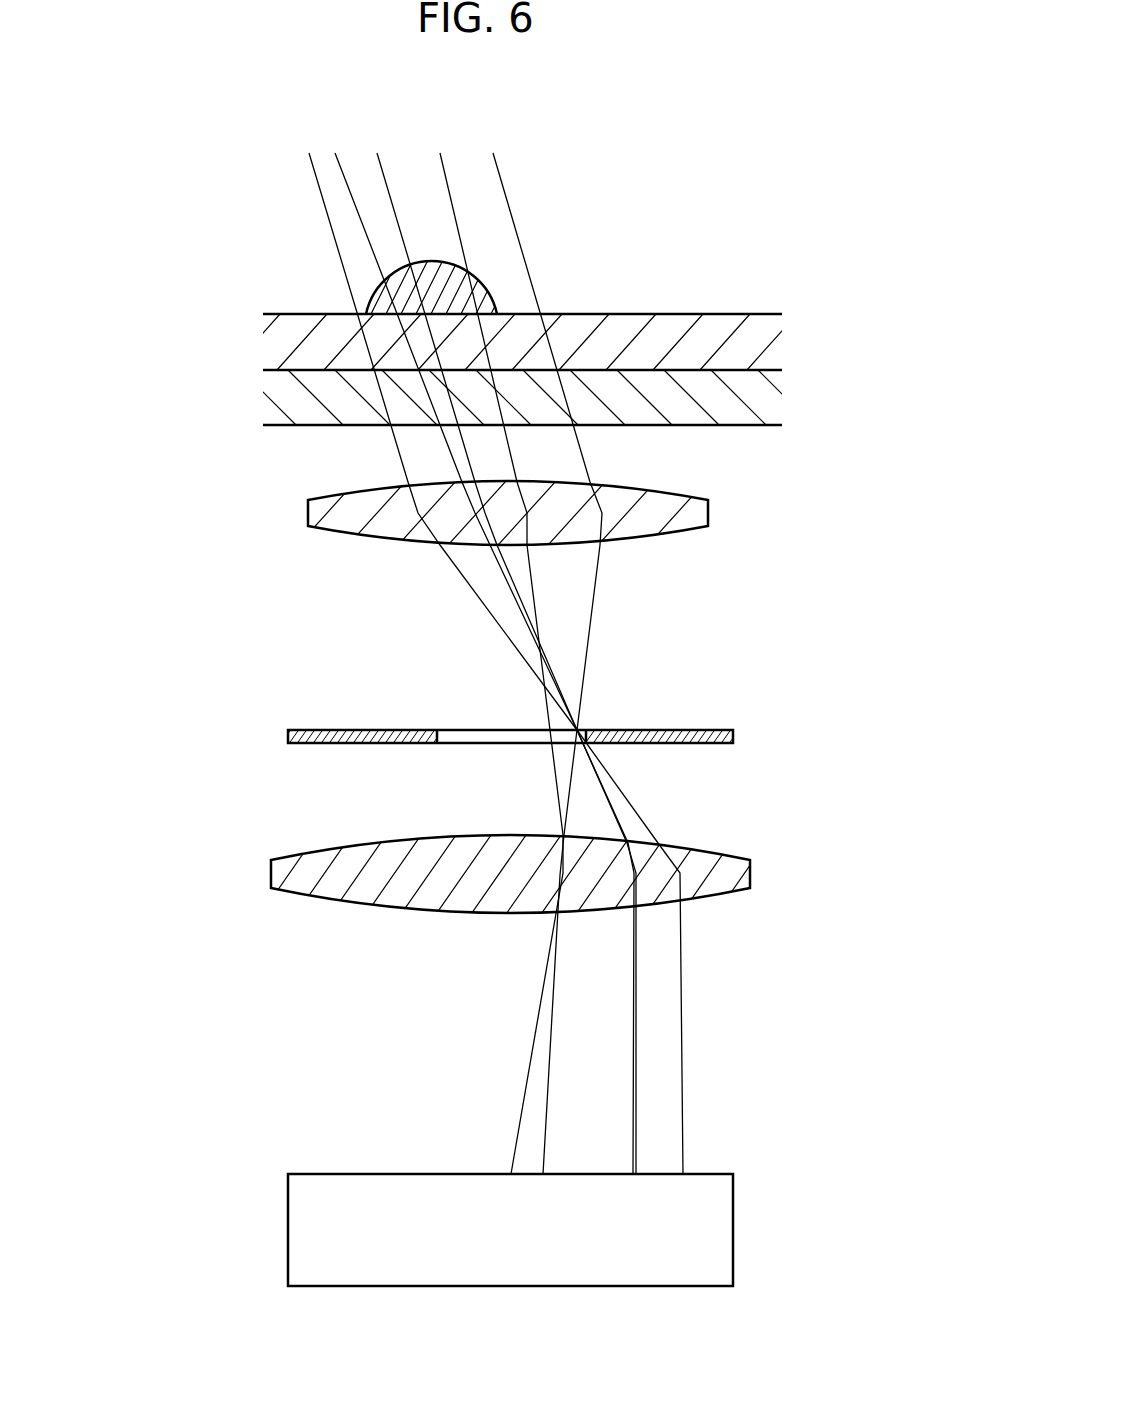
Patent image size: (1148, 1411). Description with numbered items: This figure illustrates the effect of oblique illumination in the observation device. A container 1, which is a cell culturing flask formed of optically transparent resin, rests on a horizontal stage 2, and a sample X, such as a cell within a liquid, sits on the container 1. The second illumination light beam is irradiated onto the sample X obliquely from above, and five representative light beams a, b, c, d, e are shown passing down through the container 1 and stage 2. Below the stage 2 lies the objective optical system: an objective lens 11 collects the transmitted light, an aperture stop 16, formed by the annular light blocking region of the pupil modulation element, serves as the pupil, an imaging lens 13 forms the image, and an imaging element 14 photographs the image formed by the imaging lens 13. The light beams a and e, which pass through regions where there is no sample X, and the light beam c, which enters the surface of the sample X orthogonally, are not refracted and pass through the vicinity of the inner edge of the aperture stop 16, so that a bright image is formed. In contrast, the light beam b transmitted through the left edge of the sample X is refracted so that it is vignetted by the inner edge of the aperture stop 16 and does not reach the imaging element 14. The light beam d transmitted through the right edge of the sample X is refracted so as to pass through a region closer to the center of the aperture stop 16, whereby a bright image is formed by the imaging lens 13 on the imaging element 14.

The container 1 is at (725, 314).
The stage 2 is at (743, 427).
The sample X is at (432, 263).
The objective lens 11 is at (308, 513).
The aperture stop 16 is at (288, 735).
The imaging lens 13 is at (271, 872).
The imaging element 14 is at (733, 1228).
The light beam a is at (492, 649).
The light beam b is at (480, 649).
The light beam c is at (503, 649).
The light beam d is at (497, 649).
The light beam e is at (543, 649).